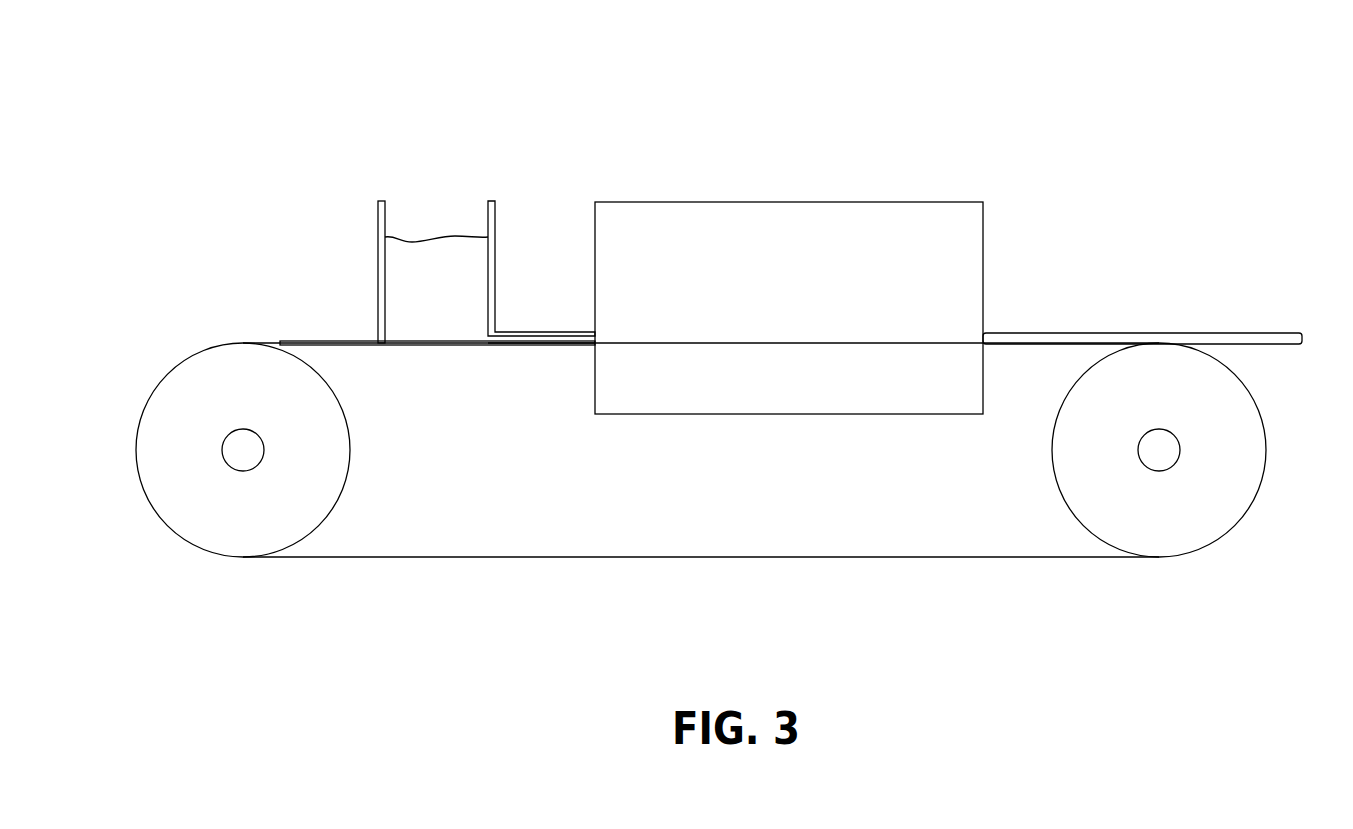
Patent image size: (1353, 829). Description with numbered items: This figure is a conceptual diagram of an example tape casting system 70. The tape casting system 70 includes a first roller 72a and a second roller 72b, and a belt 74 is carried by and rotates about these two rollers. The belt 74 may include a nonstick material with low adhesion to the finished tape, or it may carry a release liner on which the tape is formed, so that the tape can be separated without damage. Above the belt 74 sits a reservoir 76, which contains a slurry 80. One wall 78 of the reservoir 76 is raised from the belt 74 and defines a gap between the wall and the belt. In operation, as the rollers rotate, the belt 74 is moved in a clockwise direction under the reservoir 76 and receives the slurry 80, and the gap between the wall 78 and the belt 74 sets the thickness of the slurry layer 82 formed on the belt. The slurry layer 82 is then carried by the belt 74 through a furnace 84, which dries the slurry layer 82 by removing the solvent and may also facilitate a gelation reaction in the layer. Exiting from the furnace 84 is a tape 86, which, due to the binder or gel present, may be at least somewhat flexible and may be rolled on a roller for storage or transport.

The tape casting system 70 is at (216, 122).
The first roller 72a is at (162, 445).
The second roller 72b is at (1240, 450).
The belt 74 is at (291, 342).
The reservoir 76 is at (378, 180).
The wall 78 is at (495, 288).
The slurry 80 is at (396, 317).
The slurry layer 82 is at (550, 340).
The furnace 84 is at (718, 215).
The tape 86 is at (1090, 338).